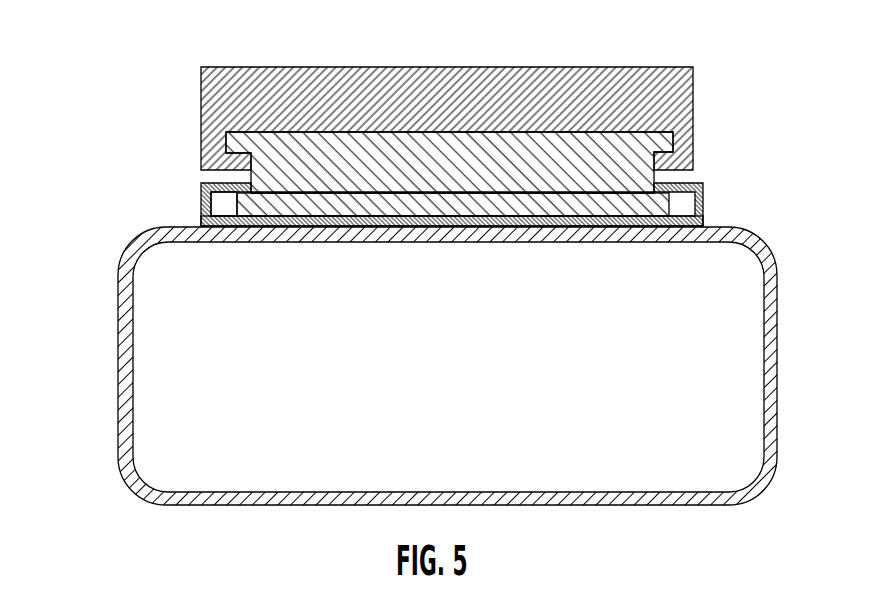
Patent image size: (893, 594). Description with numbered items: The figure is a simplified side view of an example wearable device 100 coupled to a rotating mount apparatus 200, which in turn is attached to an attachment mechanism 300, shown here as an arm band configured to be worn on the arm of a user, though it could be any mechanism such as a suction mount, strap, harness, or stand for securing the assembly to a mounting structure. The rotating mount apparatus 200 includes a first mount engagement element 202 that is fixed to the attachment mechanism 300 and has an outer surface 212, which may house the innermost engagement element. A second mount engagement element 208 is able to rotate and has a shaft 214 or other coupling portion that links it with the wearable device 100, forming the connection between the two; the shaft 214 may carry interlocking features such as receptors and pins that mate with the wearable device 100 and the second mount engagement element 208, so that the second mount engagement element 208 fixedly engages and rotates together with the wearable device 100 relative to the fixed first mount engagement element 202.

The wearable device 100 is at (698, 85).
The rotating mount apparatus 200 is at (717, 202).
The first mount engagement element 202 is at (200, 207).
The second mount engagement element 208 is at (610, 218).
The outer surface 212 is at (702, 213).
The shaft 214 is at (248, 158).
The attachment mechanism 300 is at (118, 380).